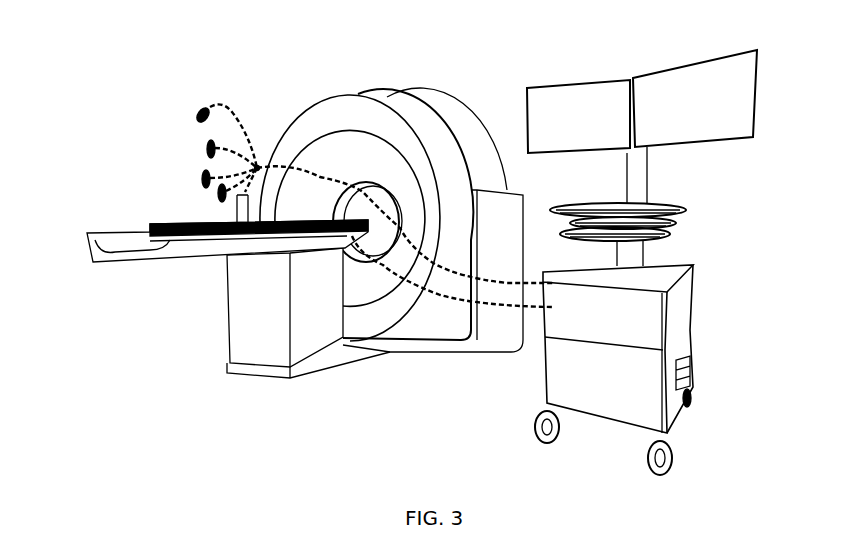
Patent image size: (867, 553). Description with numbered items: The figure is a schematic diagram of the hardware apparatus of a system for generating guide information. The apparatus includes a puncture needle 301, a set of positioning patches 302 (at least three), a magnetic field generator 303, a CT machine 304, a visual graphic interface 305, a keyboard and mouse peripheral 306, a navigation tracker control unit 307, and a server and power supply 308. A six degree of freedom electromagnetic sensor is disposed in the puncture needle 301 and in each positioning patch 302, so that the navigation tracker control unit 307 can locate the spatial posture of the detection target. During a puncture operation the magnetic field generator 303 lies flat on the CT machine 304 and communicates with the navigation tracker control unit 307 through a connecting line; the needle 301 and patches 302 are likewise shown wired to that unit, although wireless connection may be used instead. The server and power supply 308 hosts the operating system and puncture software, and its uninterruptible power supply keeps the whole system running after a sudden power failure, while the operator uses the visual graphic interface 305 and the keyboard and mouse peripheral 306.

The puncture needle 301 is at (203, 113).
The positioning patches 302 is at (202, 177).
The magnetic field generator 303 is at (153, 227).
The CT machine 304 is at (222, 335).
The visual graphic interface 305 is at (640, 148).
The keyboard and mouse peripheral 306 is at (673, 232).
The navigation tracker control unit 307 is at (650, 322).
The server and power supply 308 is at (650, 395).